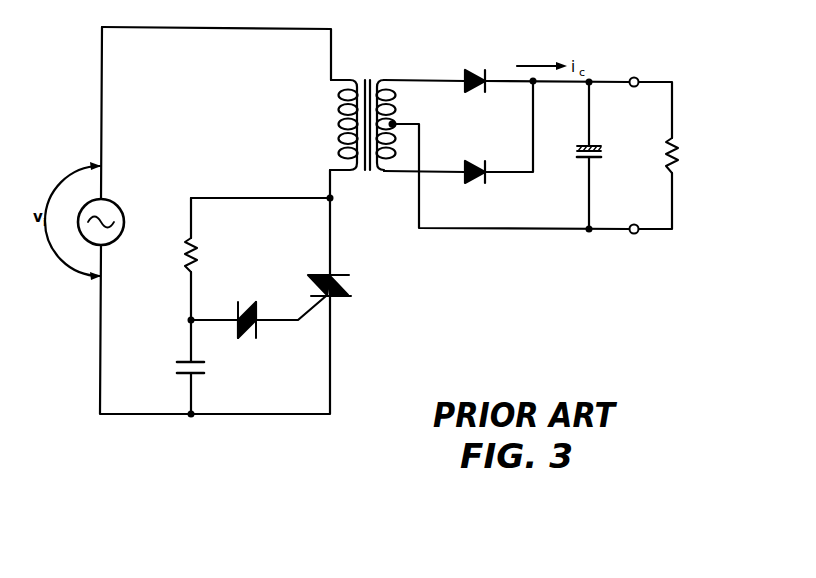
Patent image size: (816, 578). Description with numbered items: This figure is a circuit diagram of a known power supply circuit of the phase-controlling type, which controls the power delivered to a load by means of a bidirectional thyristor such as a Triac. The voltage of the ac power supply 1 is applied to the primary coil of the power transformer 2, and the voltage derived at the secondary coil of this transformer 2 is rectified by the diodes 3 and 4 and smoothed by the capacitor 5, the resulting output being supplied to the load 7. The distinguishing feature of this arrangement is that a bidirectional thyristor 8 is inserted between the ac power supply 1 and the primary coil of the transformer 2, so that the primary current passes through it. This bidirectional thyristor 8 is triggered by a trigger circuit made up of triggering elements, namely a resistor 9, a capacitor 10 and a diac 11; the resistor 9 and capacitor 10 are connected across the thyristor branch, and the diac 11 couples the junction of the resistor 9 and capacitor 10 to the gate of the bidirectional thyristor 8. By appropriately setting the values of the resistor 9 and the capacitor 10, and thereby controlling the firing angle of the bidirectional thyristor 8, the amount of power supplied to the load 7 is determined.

The ac power supply 1 is at (124, 222).
The power transformer 2 is at (365, 66).
The diode 3 is at (479, 70).
The diode 4 is at (479, 160).
The capacitor 5 is at (603, 155).
The load 7 is at (677, 157).
The bidirectional thyristor 8 is at (349, 286).
The resistor 9 is at (197, 255).
The capacitor 10 is at (206, 371).
The diac 11 is at (242, 300).